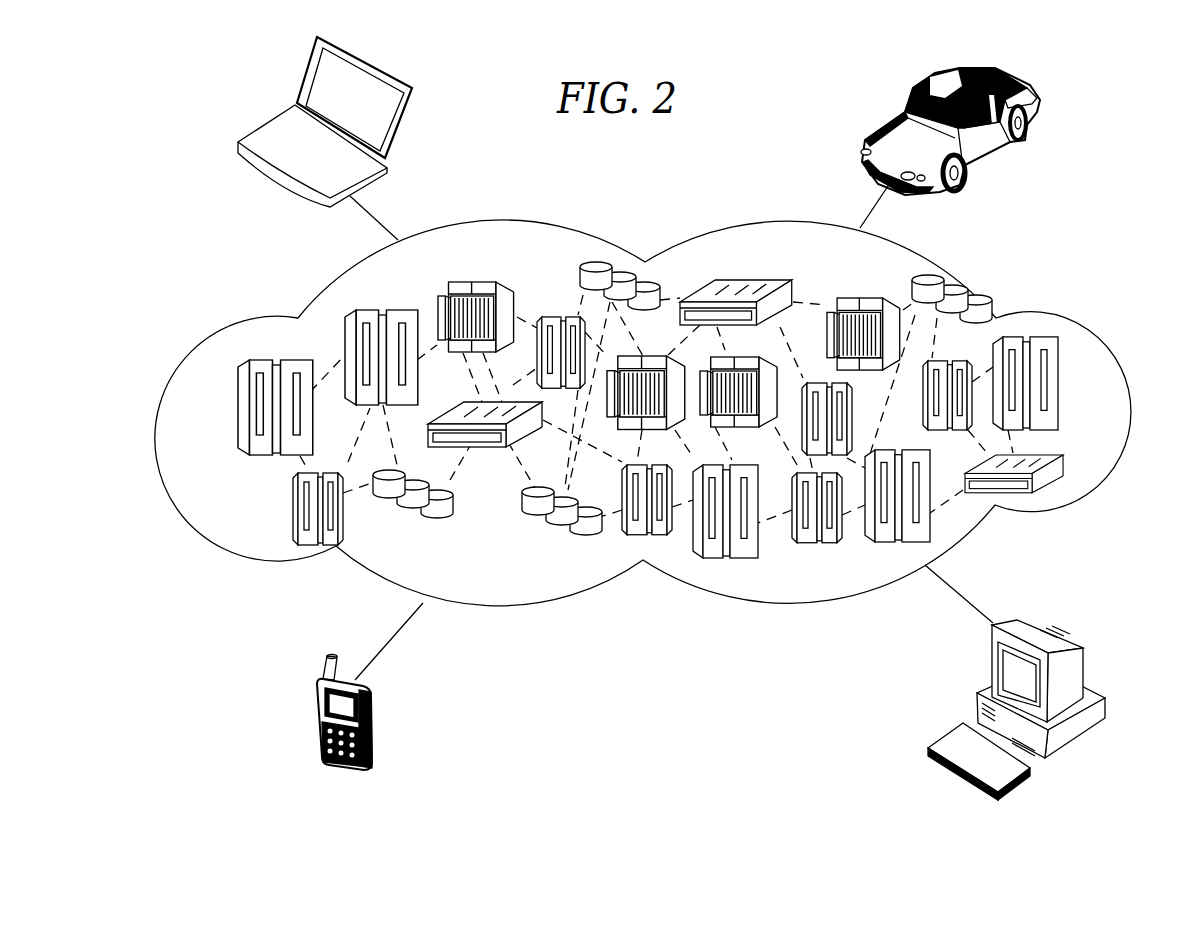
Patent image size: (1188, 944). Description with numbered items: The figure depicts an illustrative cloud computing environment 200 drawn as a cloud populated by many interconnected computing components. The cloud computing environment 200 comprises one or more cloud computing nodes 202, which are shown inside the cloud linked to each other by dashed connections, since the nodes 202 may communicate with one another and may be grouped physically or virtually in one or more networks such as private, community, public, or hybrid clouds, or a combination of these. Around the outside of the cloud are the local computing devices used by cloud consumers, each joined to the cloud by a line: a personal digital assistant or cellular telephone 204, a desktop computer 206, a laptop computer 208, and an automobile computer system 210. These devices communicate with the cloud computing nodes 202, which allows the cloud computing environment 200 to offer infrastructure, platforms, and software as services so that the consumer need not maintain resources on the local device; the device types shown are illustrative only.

The cloud computing environment 200 is at (1088, 332).
The cloud computing nodes 202 is at (1047, 488).
The personal digital assistant or cellular telephone 204 is at (377, 692).
The desktop computer 206 is at (980, 687).
The laptop computer 208 is at (275, 115).
The automobile computer system 210 is at (882, 125).